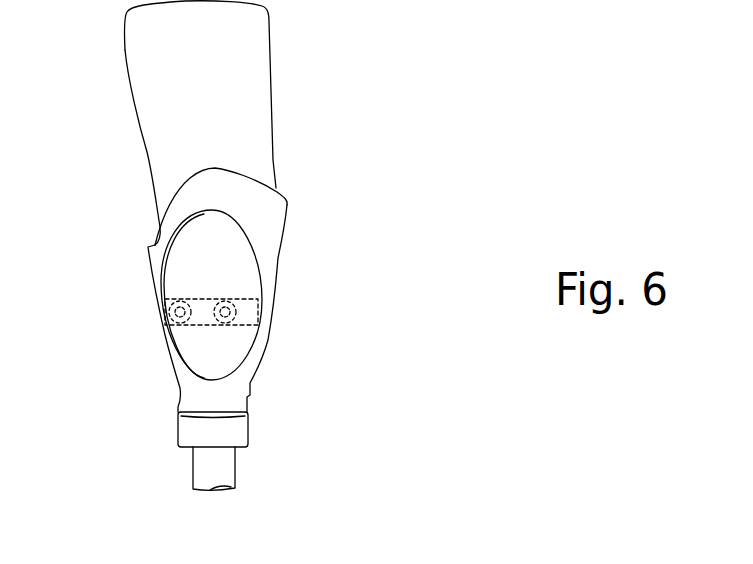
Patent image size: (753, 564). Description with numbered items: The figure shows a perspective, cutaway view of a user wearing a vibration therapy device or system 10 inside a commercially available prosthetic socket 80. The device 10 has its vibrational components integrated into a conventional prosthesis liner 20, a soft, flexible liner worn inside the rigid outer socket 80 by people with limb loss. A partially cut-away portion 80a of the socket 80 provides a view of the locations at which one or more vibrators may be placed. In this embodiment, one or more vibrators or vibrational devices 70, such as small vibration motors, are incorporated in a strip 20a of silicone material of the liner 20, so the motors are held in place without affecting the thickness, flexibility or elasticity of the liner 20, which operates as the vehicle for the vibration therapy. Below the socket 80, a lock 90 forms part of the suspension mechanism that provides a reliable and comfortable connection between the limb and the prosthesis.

The device 10 is at (318, 190).
The prosthesis liner 20 is at (228, 212).
The strip 20a is at (253, 305).
The vibration motors 70 is at (223, 323).
The prosthetic socket 80 is at (267, 343).
The partially cut-away portion 80a is at (268, 245).
The lock 90 is at (245, 433).